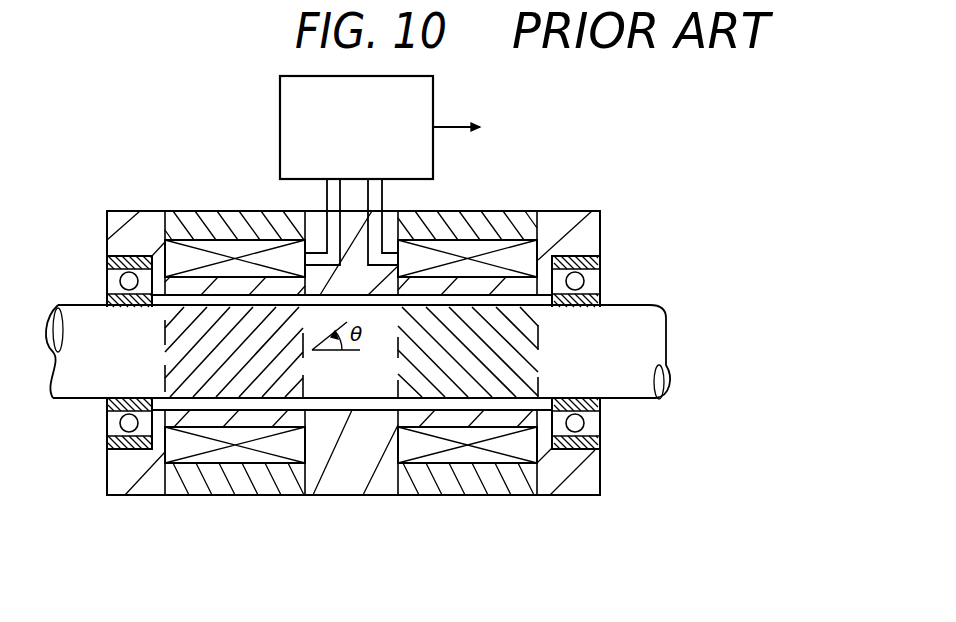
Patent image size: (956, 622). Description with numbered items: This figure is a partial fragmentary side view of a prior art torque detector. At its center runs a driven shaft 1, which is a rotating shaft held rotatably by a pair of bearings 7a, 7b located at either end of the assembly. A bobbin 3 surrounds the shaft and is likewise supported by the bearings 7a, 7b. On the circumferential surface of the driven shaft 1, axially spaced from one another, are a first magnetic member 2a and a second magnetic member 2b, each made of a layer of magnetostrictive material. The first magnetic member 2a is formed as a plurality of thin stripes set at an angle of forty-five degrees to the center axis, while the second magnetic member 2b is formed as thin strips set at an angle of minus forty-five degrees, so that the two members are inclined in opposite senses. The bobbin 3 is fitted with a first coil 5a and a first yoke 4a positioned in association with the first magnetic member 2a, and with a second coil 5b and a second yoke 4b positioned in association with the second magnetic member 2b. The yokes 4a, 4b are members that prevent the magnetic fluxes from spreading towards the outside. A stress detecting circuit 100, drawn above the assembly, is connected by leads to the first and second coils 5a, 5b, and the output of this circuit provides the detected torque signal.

The stress detecting circuit 100 is at (280, 118).
The bobbin 3 is at (583, 233).
The driven shaft 1 is at (625, 330).
The first magnetic member 2a is at (172, 367).
The second magnetic member 2b is at (538, 367).
The bearing 7a is at (107, 438).
The bearing 7b is at (600, 442).
The first yoke 4a is at (210, 477).
The second yoke 4b is at (457, 482).
The first coil 5a is at (297, 442).
The second coil 5b is at (415, 447).